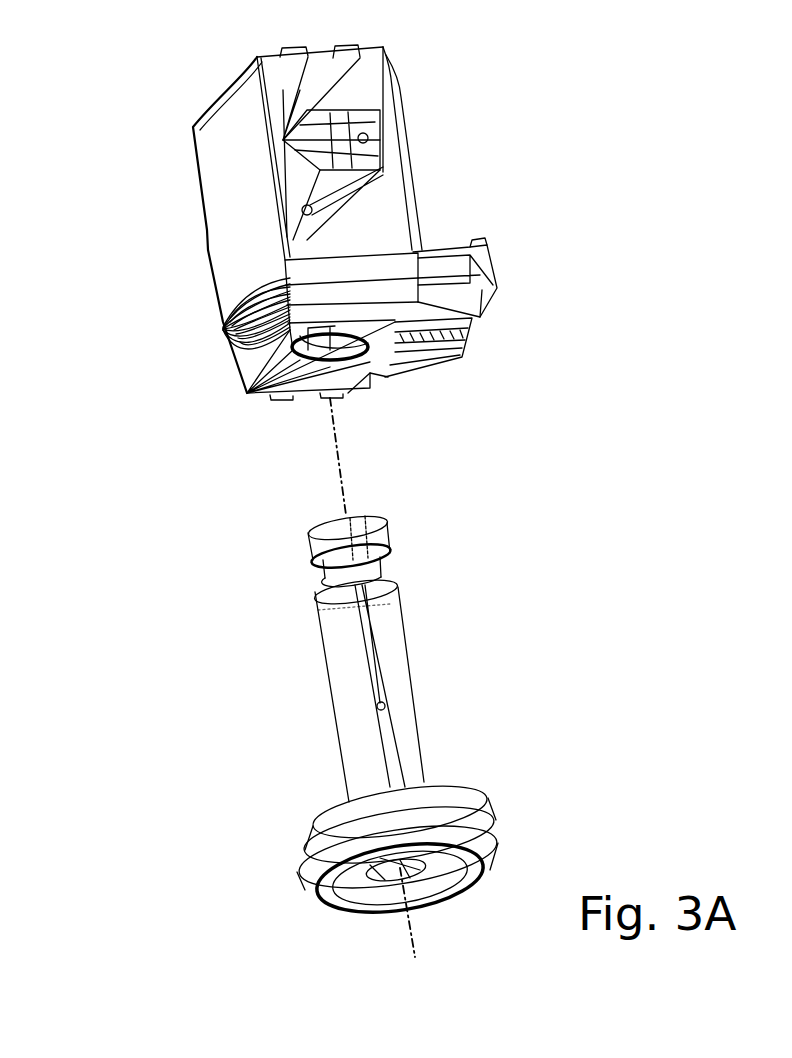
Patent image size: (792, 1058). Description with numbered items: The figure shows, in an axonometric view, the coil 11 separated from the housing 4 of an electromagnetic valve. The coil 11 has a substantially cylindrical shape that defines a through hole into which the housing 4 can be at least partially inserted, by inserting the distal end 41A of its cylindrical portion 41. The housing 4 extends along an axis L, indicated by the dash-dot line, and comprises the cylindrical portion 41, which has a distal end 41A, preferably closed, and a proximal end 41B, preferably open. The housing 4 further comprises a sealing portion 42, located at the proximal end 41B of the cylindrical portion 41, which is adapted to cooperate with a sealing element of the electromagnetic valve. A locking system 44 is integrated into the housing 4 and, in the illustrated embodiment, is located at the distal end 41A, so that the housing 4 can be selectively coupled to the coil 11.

The coil 11 is at (223, 167).
The axis L is at (347, 459).
The housing 4 is at (262, 740).
The locking system 44 is at (280, 553).
The cylindrical portion 41 is at (446, 694).
The distal end 41A is at (440, 592).
The proximal end 41B is at (380, 890).
The sealing portion 42 is at (522, 831).